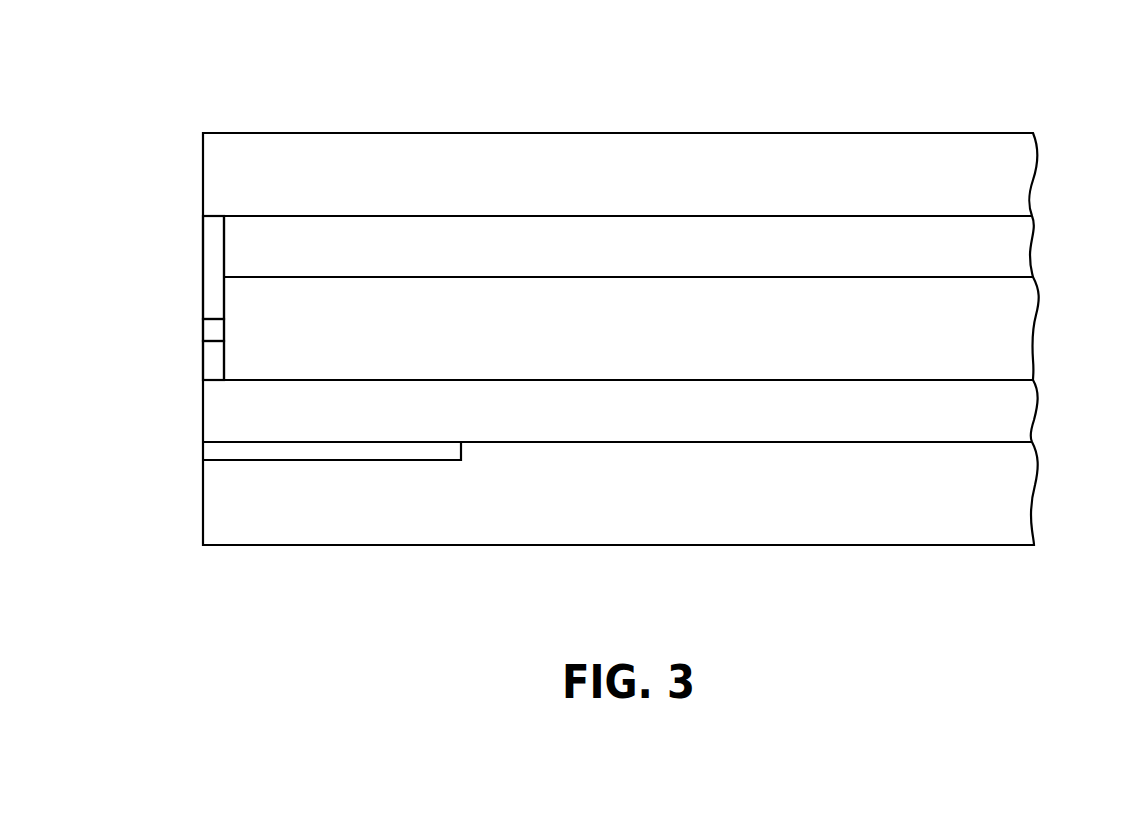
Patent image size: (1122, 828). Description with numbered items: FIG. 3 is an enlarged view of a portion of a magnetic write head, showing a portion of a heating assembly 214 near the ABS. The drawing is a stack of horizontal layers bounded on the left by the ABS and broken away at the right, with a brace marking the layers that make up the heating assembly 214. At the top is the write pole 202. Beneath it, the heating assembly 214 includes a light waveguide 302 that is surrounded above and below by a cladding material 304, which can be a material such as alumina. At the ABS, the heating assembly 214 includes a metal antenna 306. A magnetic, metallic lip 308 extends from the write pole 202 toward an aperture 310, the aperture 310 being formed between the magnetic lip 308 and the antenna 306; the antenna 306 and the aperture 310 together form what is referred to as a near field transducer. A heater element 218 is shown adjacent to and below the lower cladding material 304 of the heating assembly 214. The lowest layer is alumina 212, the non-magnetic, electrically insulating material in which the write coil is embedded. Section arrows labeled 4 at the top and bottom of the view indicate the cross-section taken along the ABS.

The write pole 202 is at (617, 183).
The alumina 212 is at (613, 503).
The heating assembly 214 is at (1050, 213).
The heater element 218 is at (213, 450).
The light waveguide 302 is at (614, 337).
The cladding material 304 is at (622, 257).
The metal antenna 306 is at (213, 368).
The magnetic lip 308 is at (215, 273).
The aperture 310 is at (216, 330).
The air bearing surface ABS is at (203, 205).
The section line for FIG. 4 is at (159, 177).